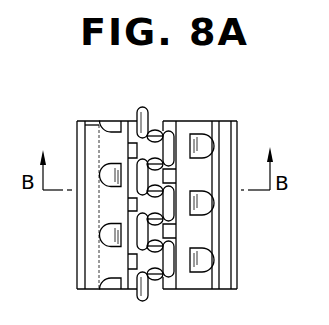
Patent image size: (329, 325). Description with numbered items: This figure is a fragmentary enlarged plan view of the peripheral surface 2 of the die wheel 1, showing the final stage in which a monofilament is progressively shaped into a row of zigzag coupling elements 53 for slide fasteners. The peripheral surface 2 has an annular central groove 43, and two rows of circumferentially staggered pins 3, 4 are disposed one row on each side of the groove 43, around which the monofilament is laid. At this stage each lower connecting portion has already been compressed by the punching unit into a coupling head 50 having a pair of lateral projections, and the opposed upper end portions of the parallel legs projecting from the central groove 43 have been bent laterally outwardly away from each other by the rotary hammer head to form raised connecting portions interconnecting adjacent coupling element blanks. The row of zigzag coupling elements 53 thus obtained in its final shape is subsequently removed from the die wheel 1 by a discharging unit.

The die wheel 1 is at (78, 256).
The peripheral surface 2 is at (131, 272).
The pins 3 is at (101, 168).
The pins 4 is at (201, 138).
The annular central groove 43 is at (149, 292).
The coupling head 50 is at (157, 129).
The zigzag coupling elements 53 is at (133, 109).